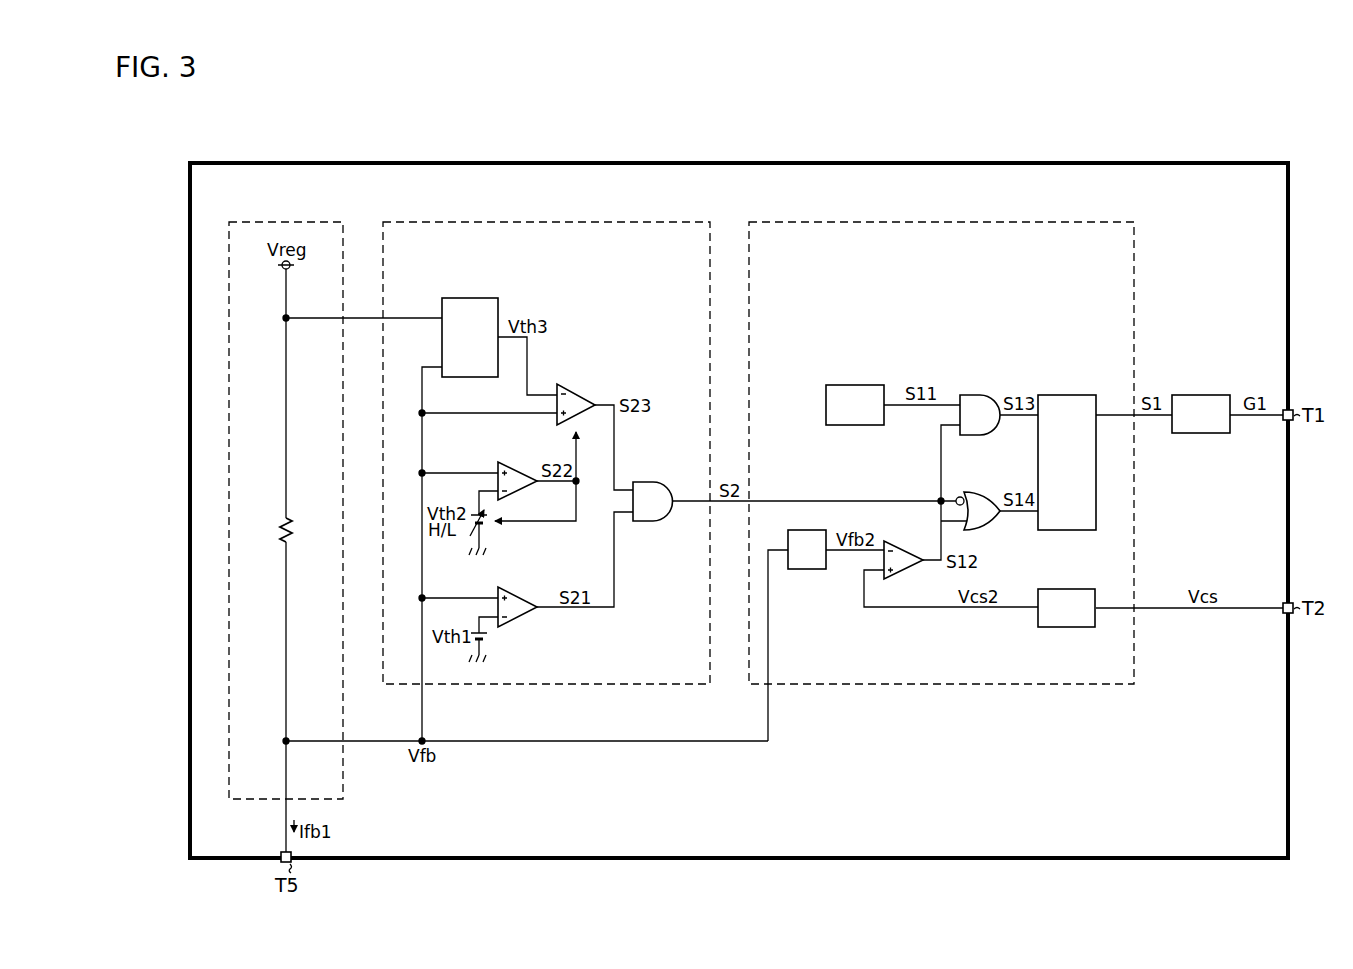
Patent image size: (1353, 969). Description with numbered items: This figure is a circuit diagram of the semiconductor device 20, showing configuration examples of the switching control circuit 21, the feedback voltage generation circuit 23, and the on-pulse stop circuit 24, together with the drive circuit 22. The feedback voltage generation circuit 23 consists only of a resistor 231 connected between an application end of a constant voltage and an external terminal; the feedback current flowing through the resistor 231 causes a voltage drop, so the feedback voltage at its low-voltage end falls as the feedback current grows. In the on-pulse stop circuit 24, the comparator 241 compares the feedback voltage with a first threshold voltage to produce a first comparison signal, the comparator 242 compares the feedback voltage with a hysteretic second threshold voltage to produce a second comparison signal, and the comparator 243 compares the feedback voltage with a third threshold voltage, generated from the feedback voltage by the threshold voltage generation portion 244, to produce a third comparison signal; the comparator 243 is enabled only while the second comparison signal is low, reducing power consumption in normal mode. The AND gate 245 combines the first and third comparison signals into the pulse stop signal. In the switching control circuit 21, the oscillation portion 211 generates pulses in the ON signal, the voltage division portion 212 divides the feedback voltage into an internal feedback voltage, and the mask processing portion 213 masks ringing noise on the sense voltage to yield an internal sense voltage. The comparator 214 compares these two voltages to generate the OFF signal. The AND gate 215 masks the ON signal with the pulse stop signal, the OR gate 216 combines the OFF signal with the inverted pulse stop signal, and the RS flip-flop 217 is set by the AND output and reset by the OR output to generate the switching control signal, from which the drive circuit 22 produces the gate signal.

The semiconductor device 20 is at (740, 164).
The switching control circuit 21 is at (942, 222).
The drive circuit 22 is at (1203, 394).
The feedback voltage generation circuit 23 is at (289, 222).
The on-pulse stop circuit 24 is at (549, 222).
The oscillation portion 211 is at (857, 385).
The voltage division portion 212 is at (807, 570).
The mask processing portion 213 is at (1068, 589).
The comparator 214 is at (900, 544).
The AND gate 215 is at (979, 394).
The OR gate 216 is at (979, 491).
The RS flip-flop 217 is at (1068, 394).
The resistor 231 is at (281, 534).
The comparator 241 is at (515, 594).
The comparator 242 is at (515, 469).
The comparator 243 is at (570, 392).
The threshold voltage generation portion 244 is at (471, 298).
The AND gate 245 is at (653, 480).